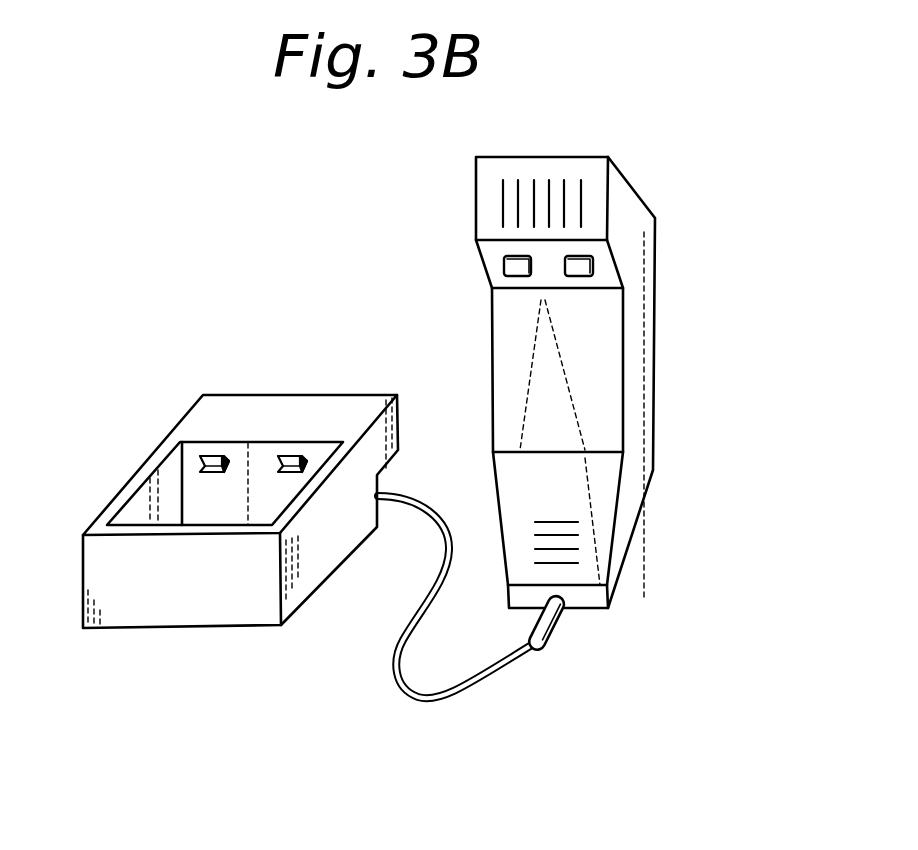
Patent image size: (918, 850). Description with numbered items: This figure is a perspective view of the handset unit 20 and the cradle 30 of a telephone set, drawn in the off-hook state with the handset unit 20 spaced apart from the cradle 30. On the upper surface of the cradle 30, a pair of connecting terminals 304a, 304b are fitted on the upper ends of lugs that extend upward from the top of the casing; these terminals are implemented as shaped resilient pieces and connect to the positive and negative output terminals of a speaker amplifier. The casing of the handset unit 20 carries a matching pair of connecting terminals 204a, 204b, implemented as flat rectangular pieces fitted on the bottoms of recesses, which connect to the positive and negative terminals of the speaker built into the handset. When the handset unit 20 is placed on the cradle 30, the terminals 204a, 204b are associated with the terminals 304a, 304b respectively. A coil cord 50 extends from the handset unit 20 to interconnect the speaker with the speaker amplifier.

The handset unit 20 is at (655, 372).
The connecting terminal 204a is at (590, 266).
The connecting terminal 204b is at (507, 268).
The cradle 30 is at (142, 458).
The connecting terminal 304a is at (293, 452).
The connecting terminal 304b is at (208, 453).
The coil cord 50 is at (395, 676).